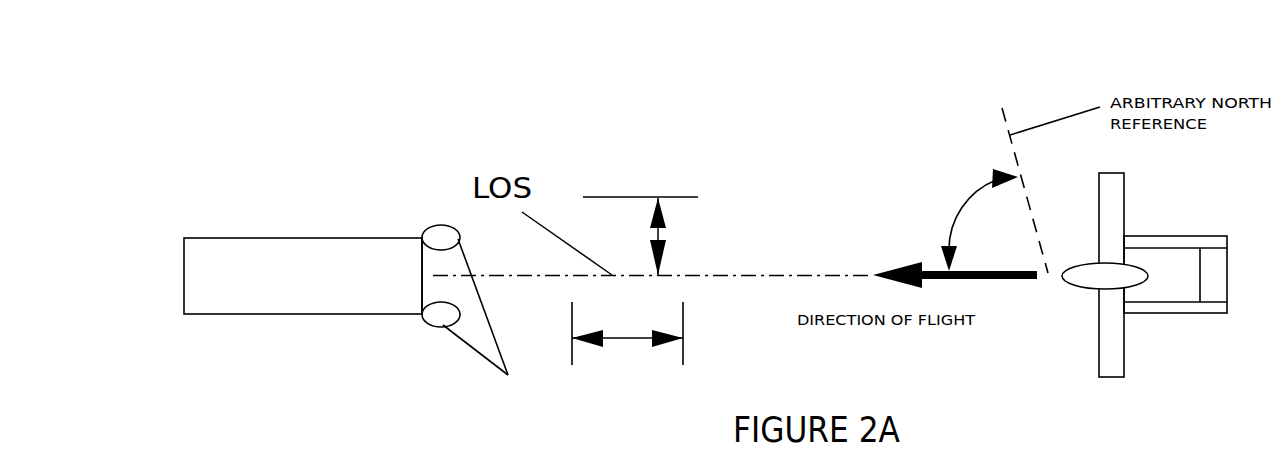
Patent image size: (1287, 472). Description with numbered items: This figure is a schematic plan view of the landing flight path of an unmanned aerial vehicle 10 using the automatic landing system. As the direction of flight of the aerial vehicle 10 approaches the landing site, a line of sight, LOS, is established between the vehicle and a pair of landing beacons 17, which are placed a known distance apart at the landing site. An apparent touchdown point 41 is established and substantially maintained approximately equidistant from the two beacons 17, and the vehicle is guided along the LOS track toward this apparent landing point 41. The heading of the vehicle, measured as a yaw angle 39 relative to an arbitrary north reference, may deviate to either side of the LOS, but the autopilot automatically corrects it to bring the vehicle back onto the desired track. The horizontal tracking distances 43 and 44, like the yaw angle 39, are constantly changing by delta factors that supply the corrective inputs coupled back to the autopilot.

The aerial vehicle 10 is at (1098, 298).
The landing beacons 17 is at (363, 316).
The yaw angle 39 is at (972, 198).
The apparent touchdown point 41 is at (422, 275).
The tracking distance 43 is at (633, 340).
The tracking distance 44 is at (660, 240).